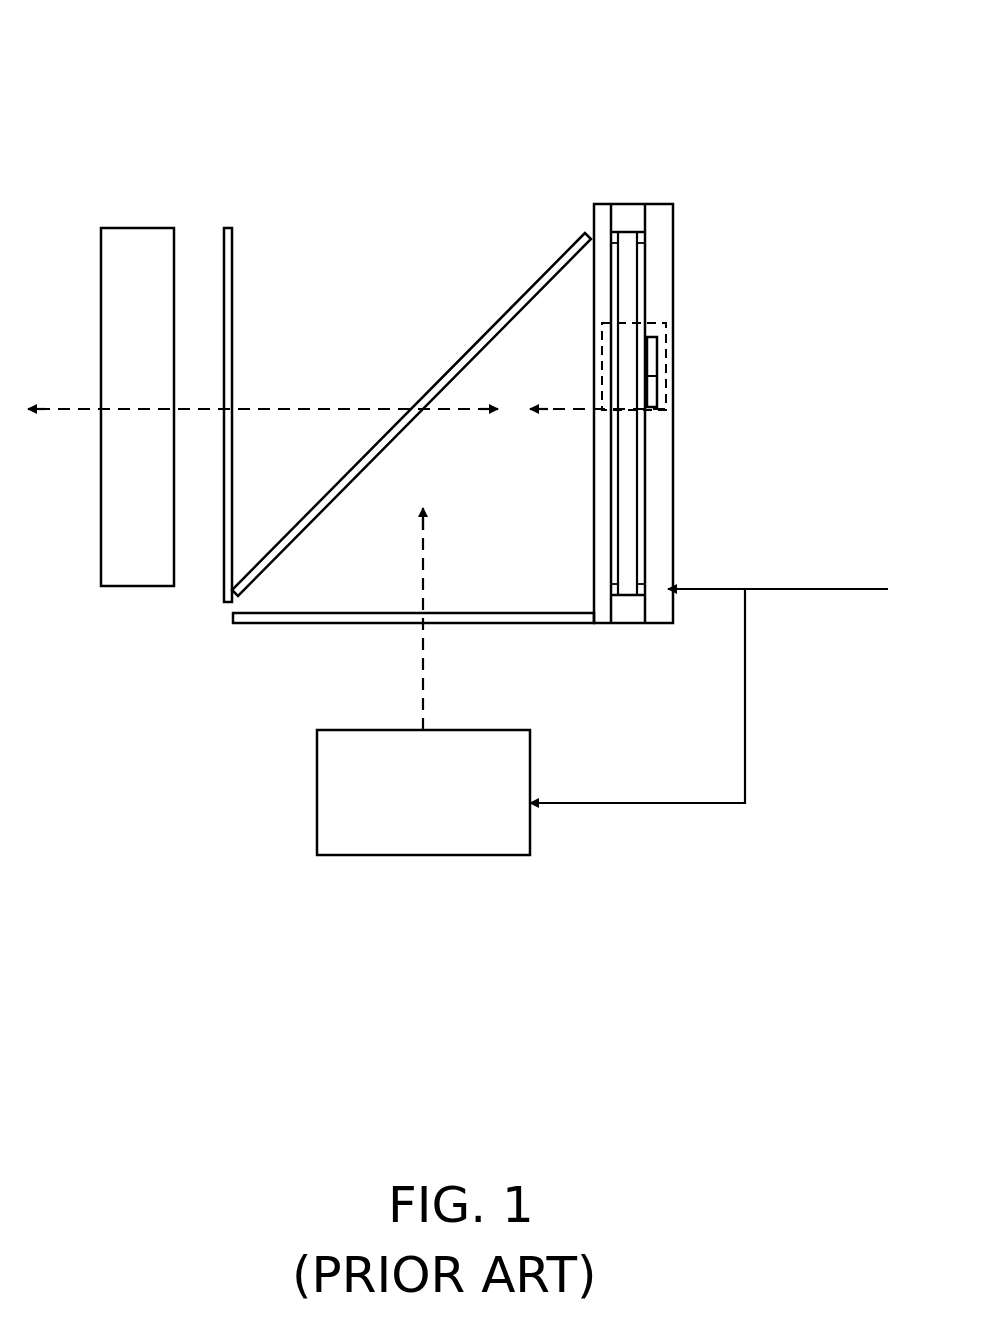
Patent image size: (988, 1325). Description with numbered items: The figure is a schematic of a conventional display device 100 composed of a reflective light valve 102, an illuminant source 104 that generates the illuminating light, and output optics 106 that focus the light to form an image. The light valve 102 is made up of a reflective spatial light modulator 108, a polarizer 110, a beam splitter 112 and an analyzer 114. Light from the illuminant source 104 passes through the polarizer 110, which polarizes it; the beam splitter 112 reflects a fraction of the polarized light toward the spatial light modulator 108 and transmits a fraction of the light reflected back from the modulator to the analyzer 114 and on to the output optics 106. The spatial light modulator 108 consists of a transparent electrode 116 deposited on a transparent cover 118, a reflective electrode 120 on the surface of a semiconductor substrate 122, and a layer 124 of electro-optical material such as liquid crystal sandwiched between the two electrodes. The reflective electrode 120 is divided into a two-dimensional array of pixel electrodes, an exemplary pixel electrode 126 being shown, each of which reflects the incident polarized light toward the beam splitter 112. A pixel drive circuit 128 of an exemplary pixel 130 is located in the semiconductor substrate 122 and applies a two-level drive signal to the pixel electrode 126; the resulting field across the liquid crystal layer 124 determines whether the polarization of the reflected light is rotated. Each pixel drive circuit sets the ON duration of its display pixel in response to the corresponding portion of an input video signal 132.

The display device 100 is at (483, 163).
The reflective light valve 102 is at (500, 480).
The illuminant source 104 is at (317, 800).
The output optics 106 is at (100, 556).
The reflective spatial light modulator 108 is at (676, 261).
The polarizer 110 is at (287, 625).
The beam splitter 112 is at (535, 300).
The analyzer 114 is at (233, 292).
The transparent electrode 116 is at (610, 575).
The transparent cover 118 is at (598, 524).
The reflective electrode 120 is at (641, 232).
The semiconductor substrate 122 is at (662, 493).
The layer of electro-optical material 124 is at (625, 580).
The pixel electrode 126 is at (658, 392).
The pixel drive circuit 128 is at (658, 370).
The pixel 130 is at (667, 343).
The input video signal 132 is at (752, 588).